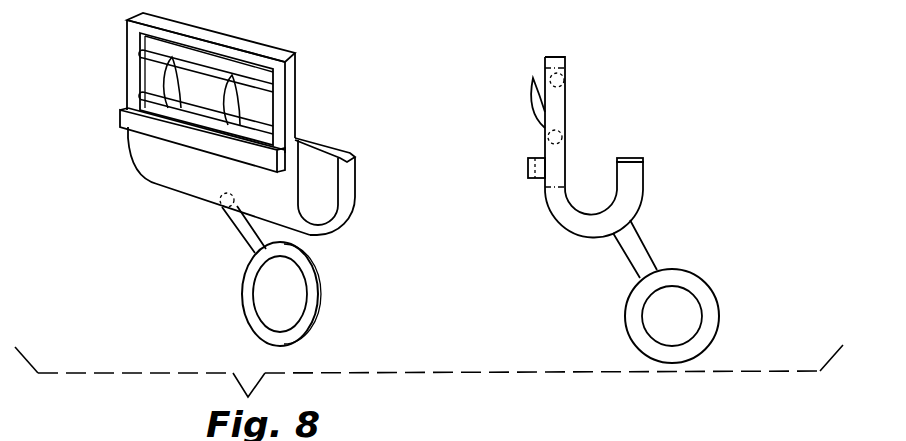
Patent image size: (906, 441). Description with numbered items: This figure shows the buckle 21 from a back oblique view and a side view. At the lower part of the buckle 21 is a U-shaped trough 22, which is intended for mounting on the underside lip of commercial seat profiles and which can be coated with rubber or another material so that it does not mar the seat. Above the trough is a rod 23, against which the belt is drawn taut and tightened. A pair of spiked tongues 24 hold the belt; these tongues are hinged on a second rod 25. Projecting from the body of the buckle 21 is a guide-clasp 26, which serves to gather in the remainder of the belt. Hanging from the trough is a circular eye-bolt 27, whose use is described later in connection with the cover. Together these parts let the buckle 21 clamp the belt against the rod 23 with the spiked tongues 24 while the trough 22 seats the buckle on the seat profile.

The buckle 21 is at (330, 137).
The U-shaped trough 22 is at (323, 197).
The rod 23 is at (252, 80).
The spiked tongues 24 is at (155, 97).
The rod 25 is at (258, 125).
The guide-clasp 26 is at (152, 125).
The circular eye-bolt 27 is at (248, 285).